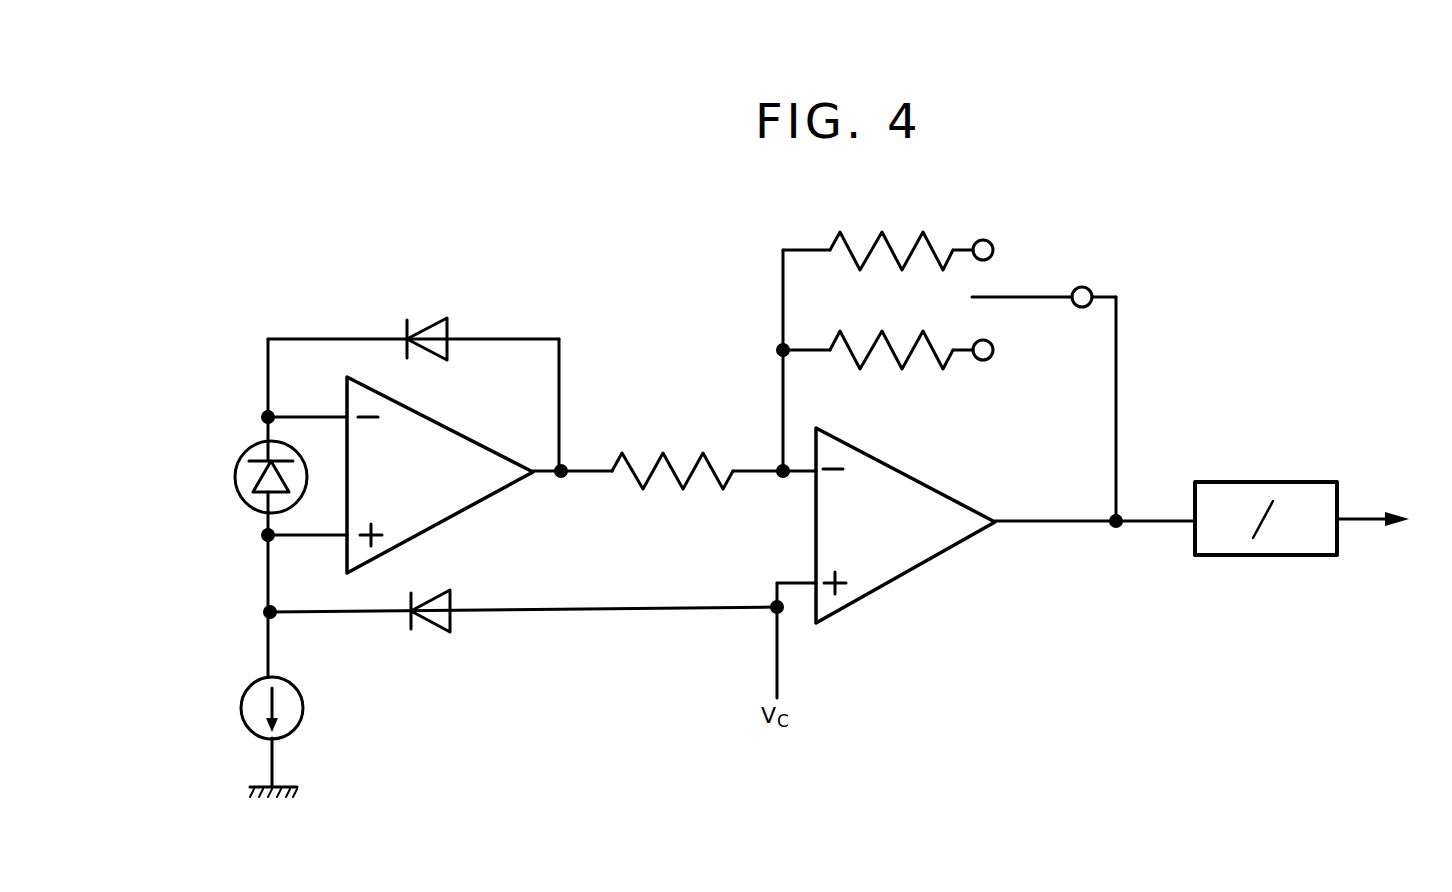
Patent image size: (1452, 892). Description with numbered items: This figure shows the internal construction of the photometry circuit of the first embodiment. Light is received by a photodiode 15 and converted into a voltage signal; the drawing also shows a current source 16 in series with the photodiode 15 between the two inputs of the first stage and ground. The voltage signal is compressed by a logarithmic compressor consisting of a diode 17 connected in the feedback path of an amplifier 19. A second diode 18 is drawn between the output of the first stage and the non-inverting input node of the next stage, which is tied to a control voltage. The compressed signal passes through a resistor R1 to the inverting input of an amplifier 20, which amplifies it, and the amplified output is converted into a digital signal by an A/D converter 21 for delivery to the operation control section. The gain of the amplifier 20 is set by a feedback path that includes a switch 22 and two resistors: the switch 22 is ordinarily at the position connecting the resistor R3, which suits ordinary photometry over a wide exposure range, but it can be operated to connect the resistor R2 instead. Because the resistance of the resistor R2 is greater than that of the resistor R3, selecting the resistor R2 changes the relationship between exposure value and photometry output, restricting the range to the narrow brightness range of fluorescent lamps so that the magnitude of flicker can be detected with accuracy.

The photodiode 15 is at (238, 490).
The current source 16 is at (304, 716).
The diode 17 is at (430, 318).
The diode 18 is at (440, 635).
The amplifier 19 is at (453, 520).
The amplifier 20 is at (915, 566).
The A/D converter 21 is at (1253, 557).
The switch 22 is at (1034, 279).
The resistor R1 is at (672, 453).
The resistor R2 is at (888, 234).
The resistor R3 is at (888, 332).